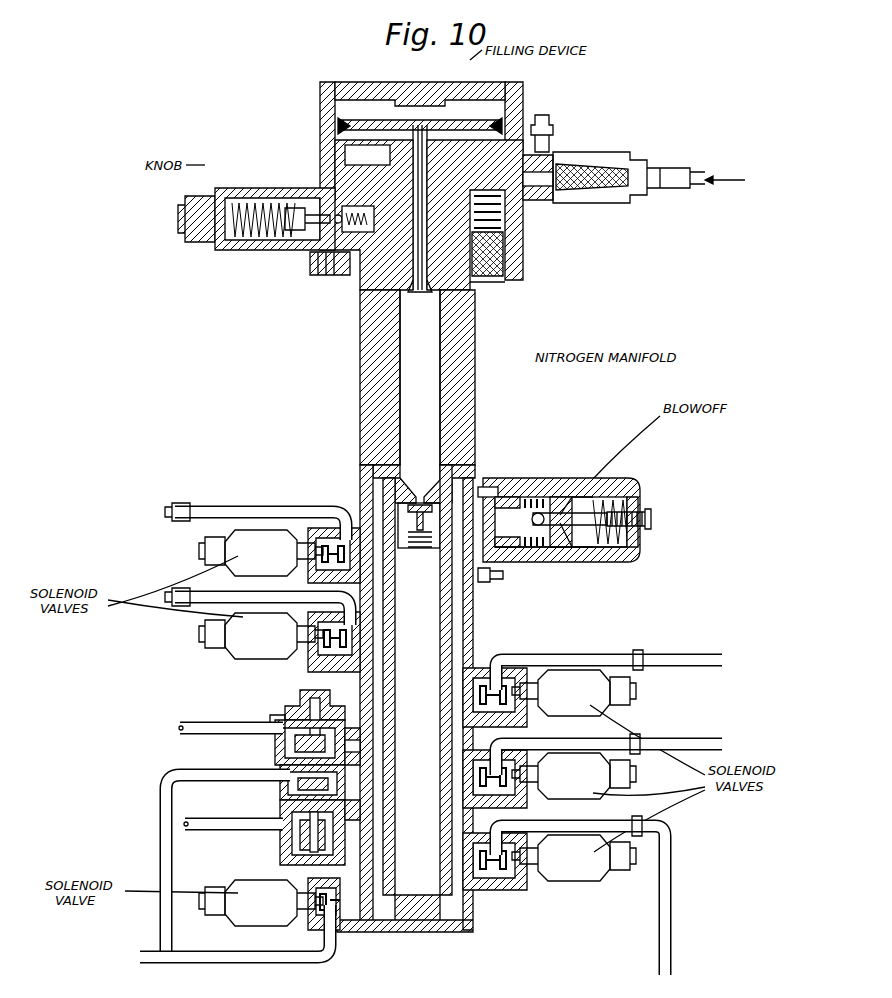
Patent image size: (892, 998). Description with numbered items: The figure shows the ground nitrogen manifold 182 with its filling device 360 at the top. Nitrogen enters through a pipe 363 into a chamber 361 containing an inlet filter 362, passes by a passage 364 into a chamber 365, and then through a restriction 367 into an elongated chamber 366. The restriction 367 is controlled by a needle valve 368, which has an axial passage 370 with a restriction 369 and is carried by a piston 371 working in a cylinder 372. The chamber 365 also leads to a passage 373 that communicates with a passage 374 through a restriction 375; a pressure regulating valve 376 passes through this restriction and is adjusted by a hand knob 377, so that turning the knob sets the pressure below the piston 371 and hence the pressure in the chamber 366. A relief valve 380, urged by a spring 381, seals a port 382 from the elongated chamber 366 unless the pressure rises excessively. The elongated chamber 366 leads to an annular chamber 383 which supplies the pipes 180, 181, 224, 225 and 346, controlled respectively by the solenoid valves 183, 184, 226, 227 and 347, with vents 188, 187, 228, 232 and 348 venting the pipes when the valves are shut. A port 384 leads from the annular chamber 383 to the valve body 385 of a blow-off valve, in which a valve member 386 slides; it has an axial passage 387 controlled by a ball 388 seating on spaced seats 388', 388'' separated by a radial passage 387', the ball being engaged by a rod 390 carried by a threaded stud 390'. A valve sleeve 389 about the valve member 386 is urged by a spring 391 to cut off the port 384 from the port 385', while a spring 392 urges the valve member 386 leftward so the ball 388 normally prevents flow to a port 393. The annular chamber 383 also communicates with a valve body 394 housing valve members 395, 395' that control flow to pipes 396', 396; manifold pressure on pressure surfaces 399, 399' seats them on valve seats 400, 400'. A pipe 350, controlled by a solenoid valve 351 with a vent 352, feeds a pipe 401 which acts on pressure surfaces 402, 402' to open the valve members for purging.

The filling device 360 is at (450, 72).
The chamber 361 is at (613, 152).
The inlet filter 362 is at (590, 190).
The pipe 363 is at (673, 166).
The passage 364 is at (525, 182).
The chamber 365 is at (503, 125).
The elongated chamber 366 is at (378, 386).
The restriction 367 is at (548, 163).
The needle valve 368 is at (413, 285).
The restriction 369 is at (445, 120).
The axial passage 370 is at (405, 372).
The piston 371 is at (372, 128).
The cylinder 372 is at (548, 122).
The passage 373 is at (378, 188).
The passage 374 is at (337, 187).
The restriction 375 is at (318, 268).
The pressure regulating valve 376 is at (350, 230).
The hand knob 377 is at (193, 198).
The relief valve 380 is at (505, 252).
The spring 381 is at (505, 218).
The port 382 is at (475, 272).
The ground nitrogen manifold 182 is at (483, 386).
The port 384 is at (462, 517).
The valve body 385 is at (598, 493).
The port 385' is at (498, 456).
The valve member 386 is at (612, 482).
The axial passage 387 is at (512, 493).
The radial passage 387' is at (566, 493).
The ball 388 is at (601, 480).
The valve seat 388' is at (551, 481).
The valve seat 388'' is at (592, 542).
The valve sleeve 389 is at (473, 550).
The rod 390 is at (610, 499).
The threaded stud 390' is at (651, 514).
The spring 391 is at (540, 526).
The spring 392 is at (620, 497).
The port 393 is at (617, 545).
The pipe 180 is at (276, 510).
The vent 188 is at (352, 526).
The solenoid valve 183 is at (222, 557).
The pipe 225 is at (207, 592).
The solenoid valve 227 is at (260, 644).
The vent 232 is at (376, 605).
The annular chamber 383 is at (468, 624).
The vent 187 is at (507, 668).
The pipe 181 is at (553, 640).
The solenoid valve 184 is at (584, 676).
The pipe 224 is at (670, 741).
The solenoid valve 226 is at (598, 781).
The pipe 396 is at (226, 709).
The valve member 395 is at (286, 704).
The valve body 394 is at (273, 743).
The pressure surface 402 is at (289, 751).
The valve seat 400 is at (368, 714).
The pressure surface 399 is at (386, 736).
The vent 228 is at (356, 752).
The valve member 395' is at (356, 781).
The pipe 396' is at (230, 808).
The pressure surface 402' is at (289, 828).
The pressure surface 399' is at (388, 804).
The vent 348 is at (340, 836).
The pipe 401 is at (172, 870).
The solenoid valve 351 is at (266, 880).
The valve seat 400' is at (371, 837).
The vent 352 is at (333, 886).
The pipe 350 is at (352, 952).
The solenoid valve 347 is at (585, 874).
The pipe 346 is at (670, 933).